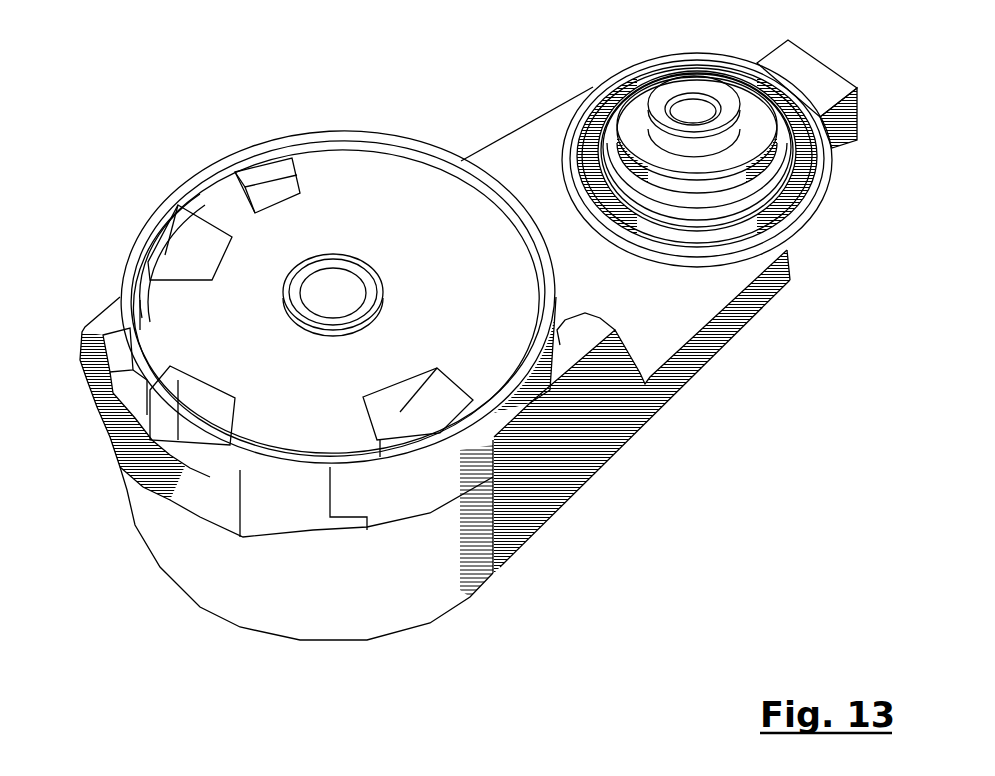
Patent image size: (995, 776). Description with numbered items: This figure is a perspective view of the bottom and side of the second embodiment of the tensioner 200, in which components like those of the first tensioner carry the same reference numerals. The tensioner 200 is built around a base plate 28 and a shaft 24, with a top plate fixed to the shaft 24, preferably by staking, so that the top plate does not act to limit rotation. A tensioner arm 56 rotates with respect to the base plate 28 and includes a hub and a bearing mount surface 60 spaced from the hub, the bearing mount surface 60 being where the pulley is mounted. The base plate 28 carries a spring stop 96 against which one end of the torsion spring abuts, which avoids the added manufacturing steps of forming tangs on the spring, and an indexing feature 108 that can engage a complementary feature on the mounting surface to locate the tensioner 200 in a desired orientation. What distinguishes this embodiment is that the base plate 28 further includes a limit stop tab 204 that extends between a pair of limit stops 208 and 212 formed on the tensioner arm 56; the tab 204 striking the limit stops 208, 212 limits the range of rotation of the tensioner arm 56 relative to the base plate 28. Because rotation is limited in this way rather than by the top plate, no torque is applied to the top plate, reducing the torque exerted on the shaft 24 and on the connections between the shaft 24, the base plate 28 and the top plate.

The tensioner 200 is at (172, 102).
The base plate 28 is at (477, 323).
The shaft 24 is at (355, 258).
The indexing feature 108 is at (260, 163).
The spring stop 96 is at (180, 257).
The limit stop 212 is at (123, 340).
The limit stop tab 204 is at (180, 403).
The limit stop 208 is at (216, 430).
The tensioner arm 56 is at (628, 427).
The bearing mount surface 60 is at (787, 203).